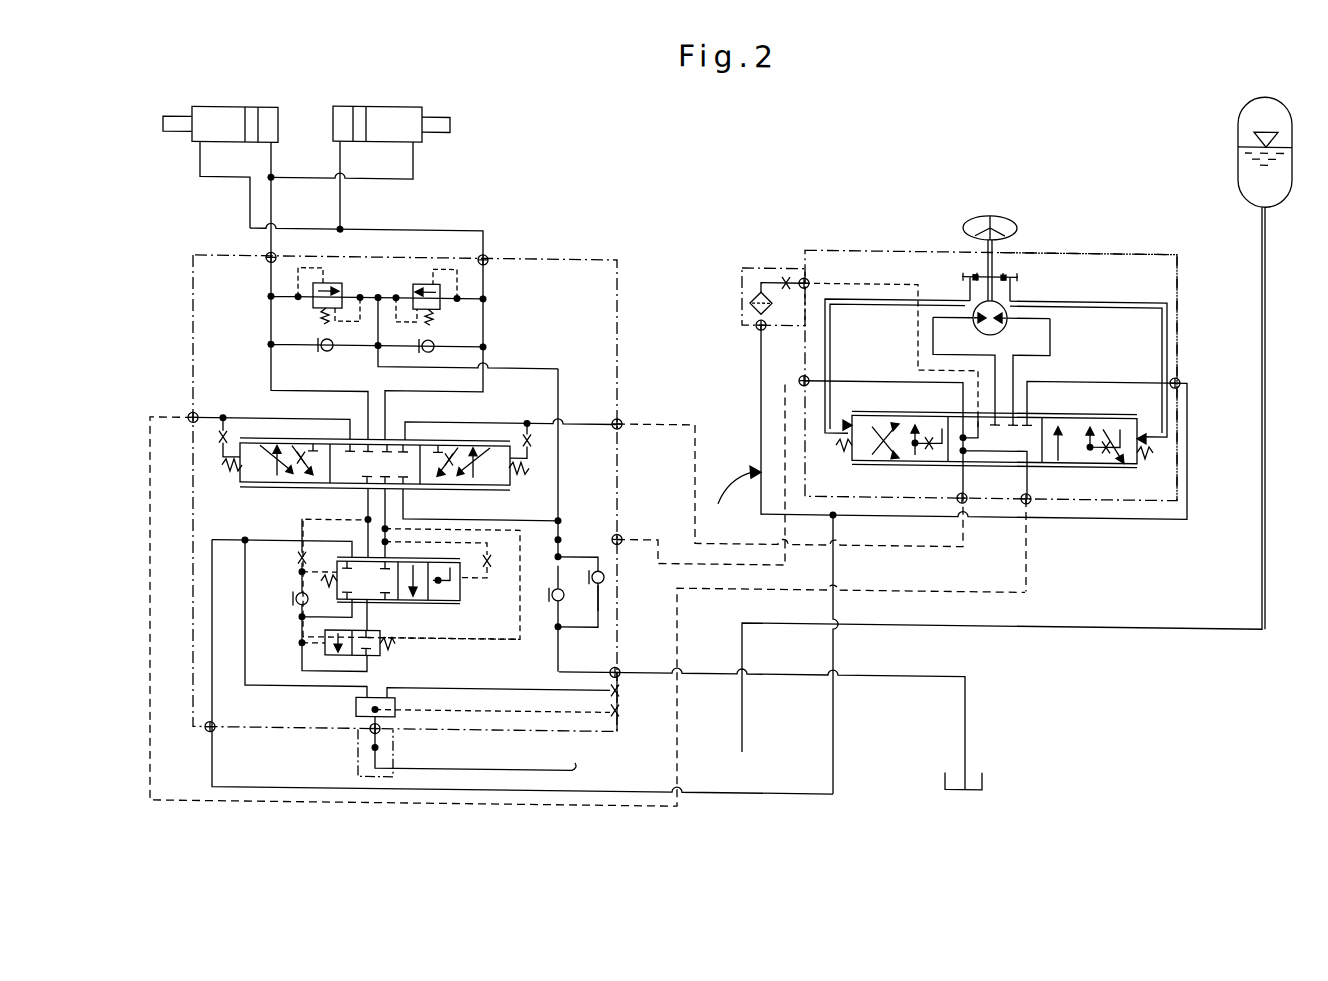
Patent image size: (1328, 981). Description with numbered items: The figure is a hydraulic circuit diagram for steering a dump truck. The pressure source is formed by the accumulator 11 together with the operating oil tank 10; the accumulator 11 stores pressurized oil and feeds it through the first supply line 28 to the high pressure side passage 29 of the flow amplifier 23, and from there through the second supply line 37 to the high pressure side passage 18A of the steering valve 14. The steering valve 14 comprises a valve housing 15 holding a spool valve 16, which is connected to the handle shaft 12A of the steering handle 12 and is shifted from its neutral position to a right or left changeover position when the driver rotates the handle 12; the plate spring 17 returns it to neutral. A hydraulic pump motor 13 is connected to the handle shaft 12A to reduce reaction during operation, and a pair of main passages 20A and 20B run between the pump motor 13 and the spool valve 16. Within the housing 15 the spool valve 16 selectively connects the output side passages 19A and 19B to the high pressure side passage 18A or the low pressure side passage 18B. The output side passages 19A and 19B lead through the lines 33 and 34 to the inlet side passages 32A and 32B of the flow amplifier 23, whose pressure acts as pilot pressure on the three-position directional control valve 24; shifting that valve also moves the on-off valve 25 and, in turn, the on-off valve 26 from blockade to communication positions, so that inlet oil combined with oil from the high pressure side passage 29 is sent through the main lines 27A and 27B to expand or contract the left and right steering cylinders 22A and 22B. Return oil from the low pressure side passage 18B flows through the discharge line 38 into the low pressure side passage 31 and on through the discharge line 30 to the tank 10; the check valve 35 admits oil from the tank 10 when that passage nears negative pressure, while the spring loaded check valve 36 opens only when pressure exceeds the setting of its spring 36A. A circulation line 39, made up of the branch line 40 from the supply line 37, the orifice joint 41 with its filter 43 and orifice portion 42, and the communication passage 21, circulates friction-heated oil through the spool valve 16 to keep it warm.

The operating oil tank 10 is at (984, 775).
The accumulator 11 is at (1238, 152).
The steering handle 12 is at (998, 204).
The handle shaft 12A is at (987, 258).
The hydraulic pump motor 13 is at (1007, 300).
The steering valve 14 is at (880, 249).
The valve housing 15 is at (1100, 248).
The spool valve 16 is at (1110, 462).
The plate spring 17 is at (846, 436).
The high pressure side passage 18A is at (1137, 375).
The low pressure side passage 18B is at (920, 380).
The output side passage 19A is at (1027, 478).
The output side passage 19B is at (965, 478).
The main passage 20A is at (1052, 330).
The main passage 20B is at (933, 335).
The communication passage 21 is at (875, 280).
The steering cylinder 22A is at (238, 110).
The steering cylinder 22B is at (398, 108).
The flow amplifier 23 is at (583, 262).
The directional control valve 24 is at (392, 443).
The on-off valve 25 is at (460, 597).
The on-off valve 26 is at (382, 659).
The main line 27A is at (268, 246).
The main line 27B is at (460, 232).
The first supply line 28 is at (975, 622).
The high pressure side passage 29 is at (280, 692).
The discharge line 30 is at (885, 673).
The low pressure side passage 31 is at (562, 549).
The inlet side passage 32A is at (293, 422).
The inlet side passage 32B is at (477, 422).
The line 33 is at (677, 693).
The line 34 is at (660, 424).
The check valve 35 is at (553, 608).
The spring loaded check valve 36 is at (604, 575).
The spring 36A is at (600, 600).
The second supply line 37 is at (784, 792).
The discharge line 38 is at (688, 550).
The circulation line 39 is at (734, 498).
The branch line 40 is at (758, 378).
The orifice joint 41 is at (748, 266).
The orifice portion 42 is at (786, 279).
The filter 43 is at (750, 300).